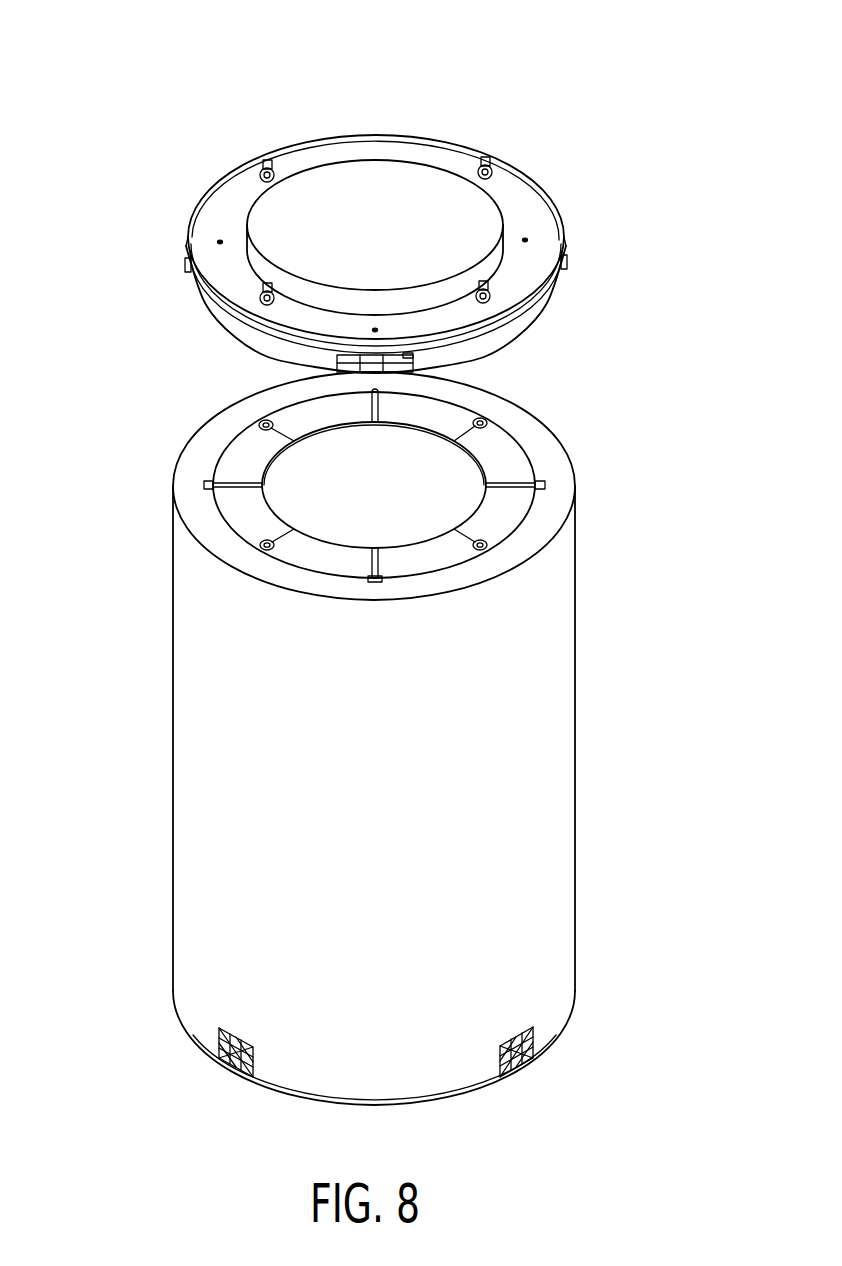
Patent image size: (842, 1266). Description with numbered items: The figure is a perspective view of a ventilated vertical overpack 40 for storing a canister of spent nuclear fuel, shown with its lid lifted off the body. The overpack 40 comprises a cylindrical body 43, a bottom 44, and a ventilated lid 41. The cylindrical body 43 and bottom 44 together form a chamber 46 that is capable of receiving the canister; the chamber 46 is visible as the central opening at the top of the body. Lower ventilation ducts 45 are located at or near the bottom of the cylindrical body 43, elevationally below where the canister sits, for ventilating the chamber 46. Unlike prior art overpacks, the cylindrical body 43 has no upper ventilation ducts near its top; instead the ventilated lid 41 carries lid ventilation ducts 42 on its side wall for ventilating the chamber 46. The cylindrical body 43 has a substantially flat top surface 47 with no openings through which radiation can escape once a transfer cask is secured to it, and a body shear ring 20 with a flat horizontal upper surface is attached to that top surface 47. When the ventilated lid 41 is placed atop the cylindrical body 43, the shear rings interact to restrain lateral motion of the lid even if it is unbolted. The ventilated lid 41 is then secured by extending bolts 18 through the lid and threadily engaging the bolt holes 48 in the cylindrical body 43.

The ventilated vertical overpack 40 is at (110, 90).
The ventilated lid 41 is at (460, 139).
The bolts 18 is at (495, 173).
The lid ventilation ducts 42 is at (562, 268).
The body shear ring 20 is at (200, 510).
The cylindrical body 43 is at (553, 748).
The bottom 44 is at (563, 1040).
The lower ventilation ducts 45 is at (532, 1068).
The chamber 46 is at (392, 502).
The top surface 47 is at (507, 503).
The bolt holes 48 is at (260, 423).